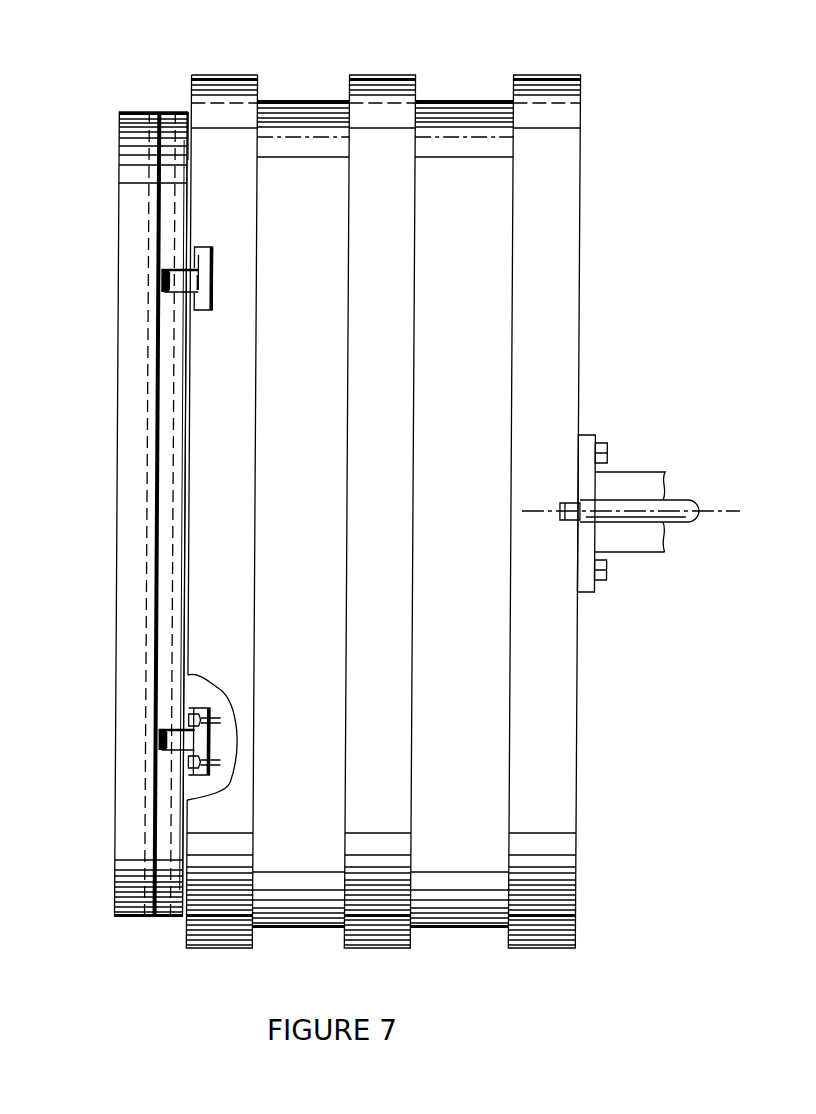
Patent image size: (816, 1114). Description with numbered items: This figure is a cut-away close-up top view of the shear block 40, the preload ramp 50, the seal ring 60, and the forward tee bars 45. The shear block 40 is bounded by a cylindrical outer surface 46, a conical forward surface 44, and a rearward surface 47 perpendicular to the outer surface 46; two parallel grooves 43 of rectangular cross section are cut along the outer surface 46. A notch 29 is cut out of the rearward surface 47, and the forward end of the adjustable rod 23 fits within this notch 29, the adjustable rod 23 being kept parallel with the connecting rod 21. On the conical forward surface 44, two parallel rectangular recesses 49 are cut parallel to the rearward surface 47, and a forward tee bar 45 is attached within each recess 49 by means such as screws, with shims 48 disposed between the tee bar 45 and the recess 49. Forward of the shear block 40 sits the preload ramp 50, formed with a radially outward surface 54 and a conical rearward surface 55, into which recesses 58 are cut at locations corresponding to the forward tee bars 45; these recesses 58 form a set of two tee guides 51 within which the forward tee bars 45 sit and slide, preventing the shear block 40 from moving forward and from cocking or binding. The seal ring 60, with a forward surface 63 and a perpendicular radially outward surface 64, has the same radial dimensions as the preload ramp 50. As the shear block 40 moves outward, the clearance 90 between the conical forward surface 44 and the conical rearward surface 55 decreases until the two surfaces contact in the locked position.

The connecting rod 21 is at (645, 472).
The adjustable rod 23 is at (676, 524).
The notch 29 is at (568, 503).
The shear block 40 is at (592, 366).
The grooves 43 is at (305, 100).
The conical forward surface 44 is at (191, 76).
The forward tee bar 45 is at (196, 283).
The cylindrical outer surface 46 is at (565, 170).
The rearward surface 47 is at (580, 215).
The shims 48 is at (193, 256).
The rectangular recess 49 is at (208, 313).
The preload ramp 50 is at (160, 920).
The tee guide 51 is at (160, 277).
The radially outward surface 54 is at (170, 111).
The conical rearward surface 55 is at (186, 446).
The recesses 58 is at (166, 293).
The seal ring 60 is at (125, 920).
The forward surface 63 is at (117, 527).
The radially outward surface 64 is at (126, 590).
The clearance 90 is at (189, 160).